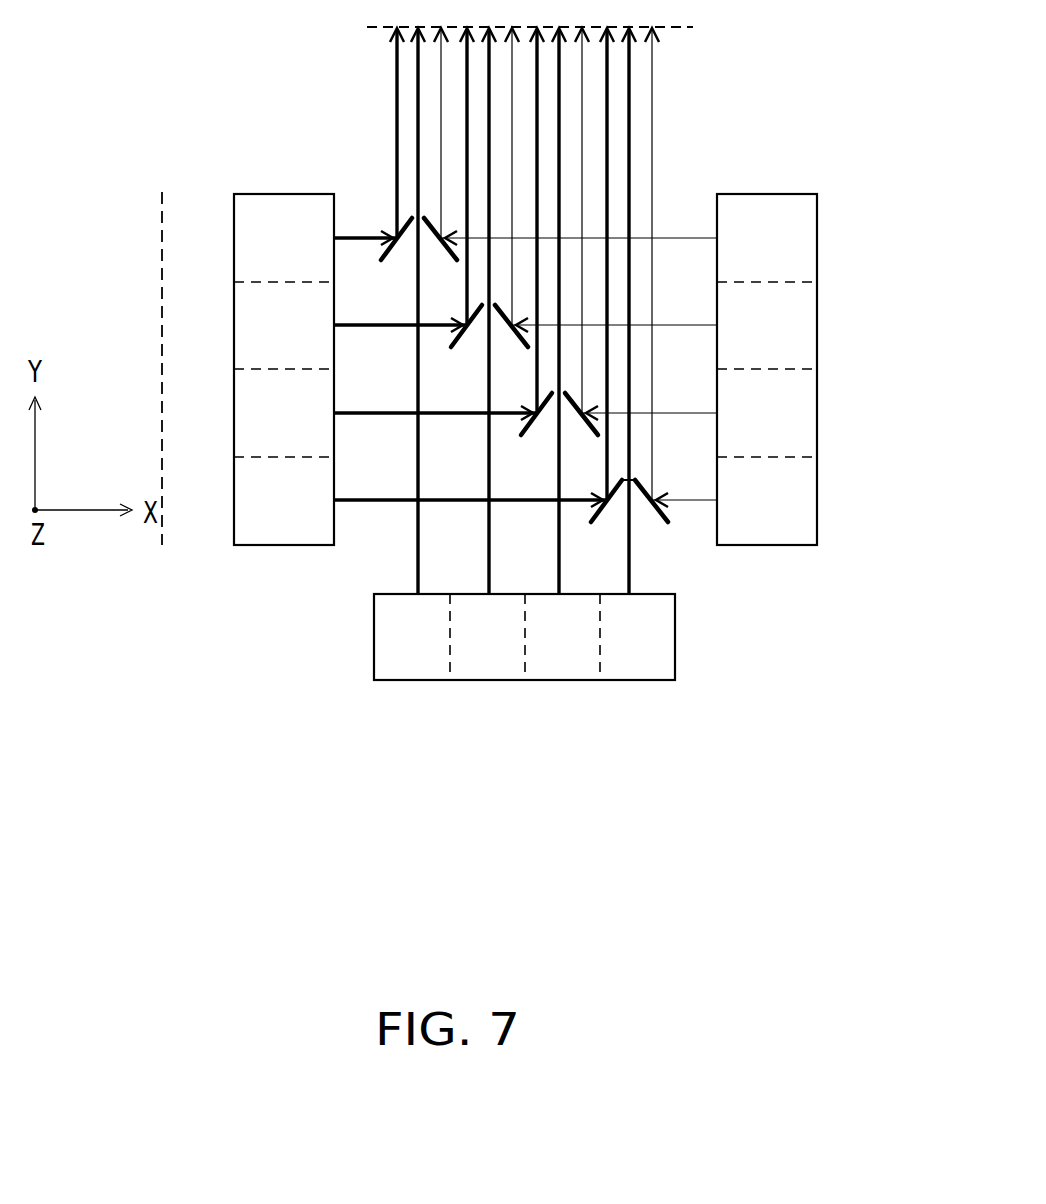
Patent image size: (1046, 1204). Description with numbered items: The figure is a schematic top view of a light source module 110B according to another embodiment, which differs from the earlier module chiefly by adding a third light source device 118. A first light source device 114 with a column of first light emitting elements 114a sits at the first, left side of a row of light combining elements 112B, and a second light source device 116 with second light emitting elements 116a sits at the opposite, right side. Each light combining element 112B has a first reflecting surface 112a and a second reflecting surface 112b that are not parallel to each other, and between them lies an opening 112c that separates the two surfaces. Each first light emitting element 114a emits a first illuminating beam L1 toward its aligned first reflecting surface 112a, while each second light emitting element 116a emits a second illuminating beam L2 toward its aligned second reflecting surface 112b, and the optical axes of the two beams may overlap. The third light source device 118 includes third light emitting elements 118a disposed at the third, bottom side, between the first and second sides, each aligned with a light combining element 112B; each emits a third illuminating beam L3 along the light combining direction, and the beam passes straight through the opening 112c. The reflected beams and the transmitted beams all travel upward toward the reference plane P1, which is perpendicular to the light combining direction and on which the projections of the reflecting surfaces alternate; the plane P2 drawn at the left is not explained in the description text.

The light source module 110B is at (895, 821).
The first reflecting surface 112a is at (600, 488).
The second reflecting surface 112b is at (669, 479).
The light combining element 112B is at (652, 525).
The opening 112c is at (632, 478).
The first light source device 114 is at (285, 166).
The first light emitting element 114a is at (249, 238).
The second light source device 116 is at (778, 161).
The second light emitting element 116a is at (805, 217).
The third light source device 118 is at (650, 697).
The third light emitting element 118a is at (668, 640).
The first illuminating beam L1 is at (368, 240).
The second illuminating beam L2 is at (690, 240).
The third illuminating beam L3 is at (418, 545).
The reference plane P1 is at (668, 31).
The second plane P2 is at (148, 231).